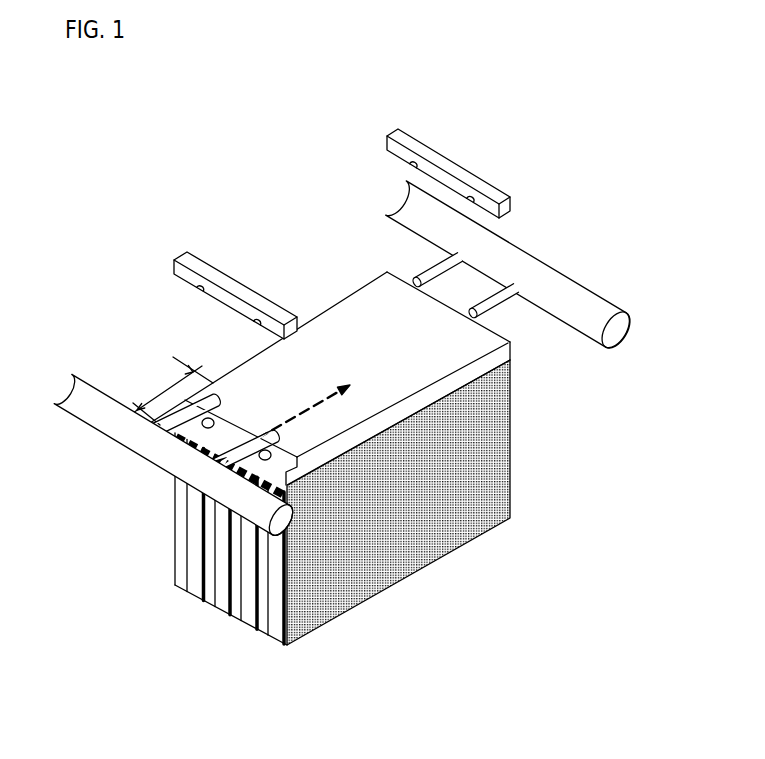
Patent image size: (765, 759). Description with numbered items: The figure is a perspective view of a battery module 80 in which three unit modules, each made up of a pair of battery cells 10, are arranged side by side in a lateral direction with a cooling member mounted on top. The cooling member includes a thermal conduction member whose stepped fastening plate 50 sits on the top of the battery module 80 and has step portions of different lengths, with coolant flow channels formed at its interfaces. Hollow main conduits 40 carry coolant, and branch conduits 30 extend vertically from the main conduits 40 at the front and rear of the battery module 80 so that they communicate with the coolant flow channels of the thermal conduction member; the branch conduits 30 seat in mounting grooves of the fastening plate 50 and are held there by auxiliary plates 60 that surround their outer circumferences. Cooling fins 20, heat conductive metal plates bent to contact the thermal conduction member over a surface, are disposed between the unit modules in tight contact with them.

The battery module 80 is at (69, 140).
The battery cells 10 is at (263, 618).
The cooling fins 20 is at (458, 522).
The branch conduits 30 is at (493, 308).
The main conduits 40 is at (107, 438).
The fastening plate 50 is at (483, 362).
The auxiliary plates 60 is at (445, 157).